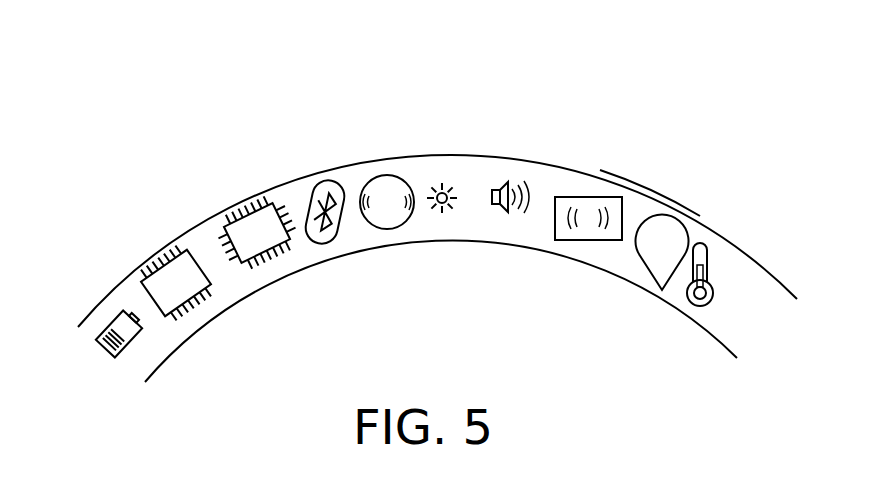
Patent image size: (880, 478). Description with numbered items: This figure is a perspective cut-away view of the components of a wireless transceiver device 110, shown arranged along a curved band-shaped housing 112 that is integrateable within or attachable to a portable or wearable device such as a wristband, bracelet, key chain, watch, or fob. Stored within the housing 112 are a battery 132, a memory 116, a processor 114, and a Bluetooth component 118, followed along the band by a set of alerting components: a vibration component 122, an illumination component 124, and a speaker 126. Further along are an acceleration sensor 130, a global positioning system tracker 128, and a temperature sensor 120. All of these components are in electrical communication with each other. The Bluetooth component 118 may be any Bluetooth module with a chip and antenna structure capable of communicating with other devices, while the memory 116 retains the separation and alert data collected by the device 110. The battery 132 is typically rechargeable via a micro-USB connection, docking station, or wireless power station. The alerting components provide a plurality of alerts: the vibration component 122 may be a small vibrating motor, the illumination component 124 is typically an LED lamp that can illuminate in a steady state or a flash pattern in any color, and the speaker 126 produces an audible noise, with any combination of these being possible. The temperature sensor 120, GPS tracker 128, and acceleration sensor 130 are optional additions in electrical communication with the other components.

The wireless transceiver device 110 is at (612, 62).
The housing 112 is at (650, 190).
The processor 114 is at (240, 220).
The memory 116 is at (170, 257).
The Bluetooth component 118 is at (333, 180).
The temperature sensor 120 is at (707, 244).
The vibration component 122 is at (387, 202).
The illumination component 124 is at (448, 190).
The speaker 126 is at (503, 183).
The global positioning system (GPS) tracker 128 is at (678, 230).
The acceleration sensor 130 is at (583, 197).
The battery 132 is at (107, 325).